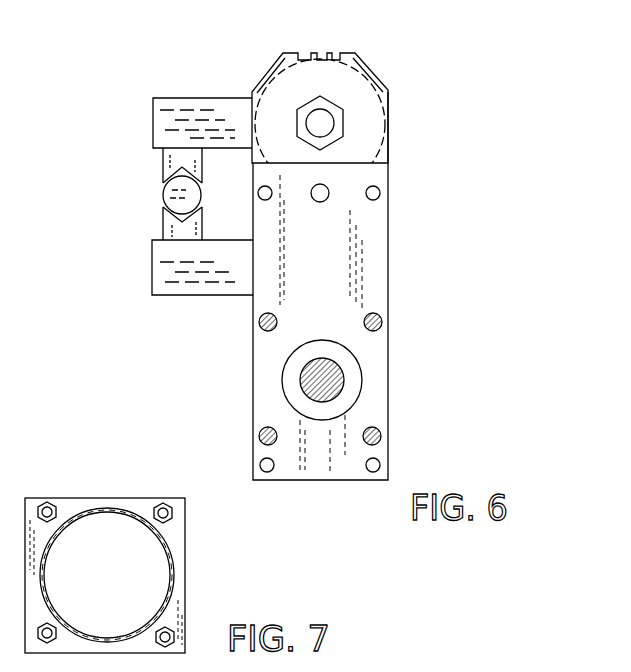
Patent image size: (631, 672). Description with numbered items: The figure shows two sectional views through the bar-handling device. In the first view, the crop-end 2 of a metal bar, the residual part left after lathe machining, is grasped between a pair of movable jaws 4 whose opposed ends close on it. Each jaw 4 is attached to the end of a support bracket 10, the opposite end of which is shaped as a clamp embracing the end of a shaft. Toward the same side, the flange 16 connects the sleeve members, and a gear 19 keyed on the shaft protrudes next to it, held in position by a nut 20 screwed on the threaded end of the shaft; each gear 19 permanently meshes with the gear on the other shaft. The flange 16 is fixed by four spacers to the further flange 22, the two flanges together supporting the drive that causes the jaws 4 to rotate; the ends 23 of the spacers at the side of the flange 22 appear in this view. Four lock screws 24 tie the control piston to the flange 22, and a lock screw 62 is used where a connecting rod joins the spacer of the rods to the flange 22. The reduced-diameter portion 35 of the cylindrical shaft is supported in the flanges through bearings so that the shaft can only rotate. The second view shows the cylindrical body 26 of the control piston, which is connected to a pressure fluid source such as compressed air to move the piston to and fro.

In FIG. 6, the crop-end 2 is at (172, 192).
In FIG. 6, the movable jaws 4 is at (175, 164).
In FIG. 6, the support brackets 10 is at (218, 116).
In FIG. 6, the flange 16 is at (285, 57).
In FIG. 6, the gear 19 is at (378, 118).
In FIG. 6, the nut 20 is at (329, 108).
In FIG. 6, the further flange 22 is at (333, 478).
In FIG. 6, the ends of the spacers 23 is at (262, 198).
In FIG. 6, the lock screws 24 is at (278, 325).
In FIG. 7, the cylindrical body 26 is at (170, 567).
In FIG. 6, the reduced-diameter portion of the shaft 35 is at (315, 378).
In FIG. 6, the lock screw 62 is at (322, 205).